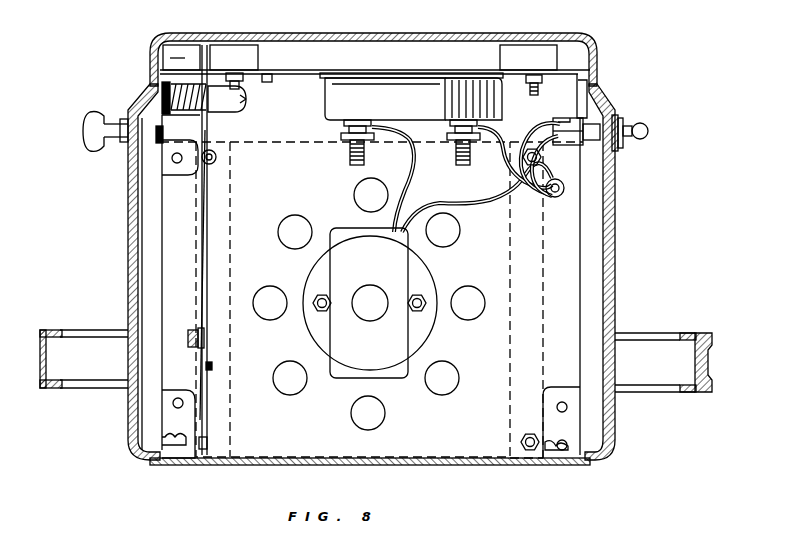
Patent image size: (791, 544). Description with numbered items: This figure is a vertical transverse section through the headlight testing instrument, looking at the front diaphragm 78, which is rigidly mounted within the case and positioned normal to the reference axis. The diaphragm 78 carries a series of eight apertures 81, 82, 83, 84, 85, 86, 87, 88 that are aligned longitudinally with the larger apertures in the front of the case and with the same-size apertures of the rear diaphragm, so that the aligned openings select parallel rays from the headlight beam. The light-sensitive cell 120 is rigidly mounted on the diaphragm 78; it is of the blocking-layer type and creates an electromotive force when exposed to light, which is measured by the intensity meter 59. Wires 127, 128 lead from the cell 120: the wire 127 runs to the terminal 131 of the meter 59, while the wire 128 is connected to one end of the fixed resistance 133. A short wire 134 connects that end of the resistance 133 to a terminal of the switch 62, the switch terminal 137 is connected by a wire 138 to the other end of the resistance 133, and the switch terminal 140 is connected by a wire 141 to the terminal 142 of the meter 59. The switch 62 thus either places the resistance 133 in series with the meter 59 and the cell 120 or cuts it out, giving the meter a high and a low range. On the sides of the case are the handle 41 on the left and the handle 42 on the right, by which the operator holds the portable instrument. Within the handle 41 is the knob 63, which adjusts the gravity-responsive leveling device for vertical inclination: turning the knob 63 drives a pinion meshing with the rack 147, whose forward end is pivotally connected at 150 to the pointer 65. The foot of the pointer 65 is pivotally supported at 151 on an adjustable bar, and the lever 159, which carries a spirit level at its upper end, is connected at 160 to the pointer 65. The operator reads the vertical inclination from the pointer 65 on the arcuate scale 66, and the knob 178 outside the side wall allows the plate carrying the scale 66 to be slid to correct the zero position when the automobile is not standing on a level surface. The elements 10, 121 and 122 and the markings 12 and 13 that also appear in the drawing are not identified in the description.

The scale 66 is at (156, 49).
The mounting block 10 is at (182, 55).
The spring pin 13 is at (76, 100).
The bracket tab 12 is at (64, 136).
The knob 178 is at (105, 148).
The handle 41 is at (98, 324).
The handle 42 is at (674, 328).
The lever 159 is at (212, 240).
The knob 63 is at (203, 188).
The diaphragm 78 is at (470, 427).
The intensity meter 59 is at (384, 104).
The terminal of the meter 131 is at (350, 152).
The terminal of the meter 142 is at (455, 163).
The wire 127 is at (413, 150).
The wire 128 is at (497, 210).
The wire 141 is at (512, 165).
The terminal of the switch 137 is at (568, 119).
The wire 138 is at (553, 122).
The short wire 134 is at (556, 134).
The terminal of the switch 140 is at (585, 141).
The fixed resistance 133 is at (550, 197).
The switch 62 is at (634, 122).
The light-sensitive cell 120 is at (405, 368).
The disc 121 is at (424, 327).
The central opening 122 is at (370, 285).
The aperture 81 is at (357, 190).
The aperture 82 is at (282, 218).
The aperture 83 is at (259, 288).
The aperture 84 is at (274, 366).
The aperture 85 is at (353, 416).
The aperture 86 is at (432, 393).
The aperture 87 is at (469, 320).
The aperture 88 is at (460, 238).
The rack 147 is at (192, 330).
The pivotal connection 150 is at (188, 340).
The connection 160 is at (211, 362).
The pointer 65 is at (197, 395).
The pivotal support 151 is at (207, 442).